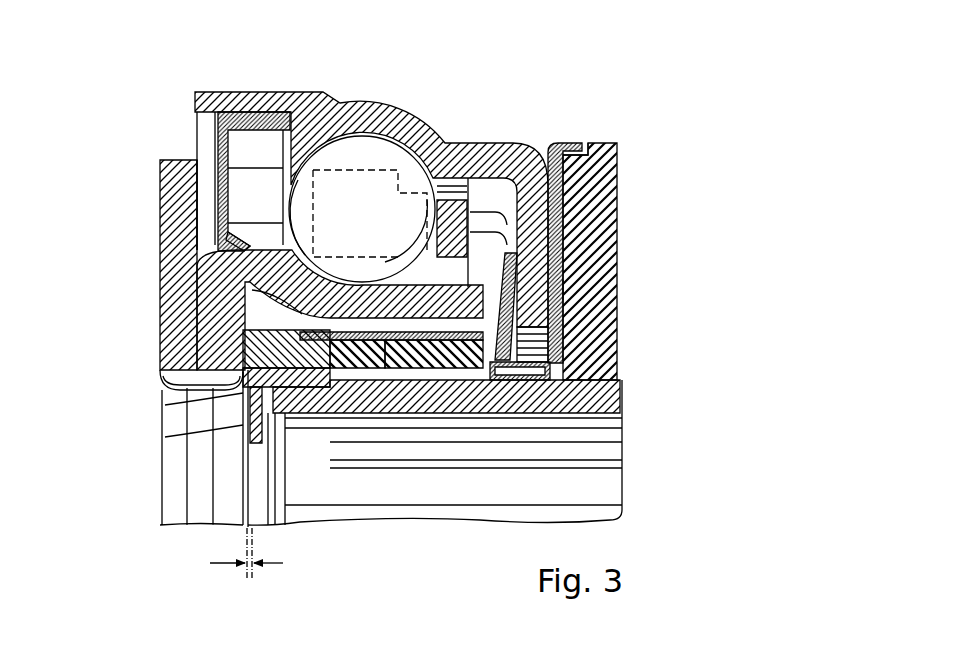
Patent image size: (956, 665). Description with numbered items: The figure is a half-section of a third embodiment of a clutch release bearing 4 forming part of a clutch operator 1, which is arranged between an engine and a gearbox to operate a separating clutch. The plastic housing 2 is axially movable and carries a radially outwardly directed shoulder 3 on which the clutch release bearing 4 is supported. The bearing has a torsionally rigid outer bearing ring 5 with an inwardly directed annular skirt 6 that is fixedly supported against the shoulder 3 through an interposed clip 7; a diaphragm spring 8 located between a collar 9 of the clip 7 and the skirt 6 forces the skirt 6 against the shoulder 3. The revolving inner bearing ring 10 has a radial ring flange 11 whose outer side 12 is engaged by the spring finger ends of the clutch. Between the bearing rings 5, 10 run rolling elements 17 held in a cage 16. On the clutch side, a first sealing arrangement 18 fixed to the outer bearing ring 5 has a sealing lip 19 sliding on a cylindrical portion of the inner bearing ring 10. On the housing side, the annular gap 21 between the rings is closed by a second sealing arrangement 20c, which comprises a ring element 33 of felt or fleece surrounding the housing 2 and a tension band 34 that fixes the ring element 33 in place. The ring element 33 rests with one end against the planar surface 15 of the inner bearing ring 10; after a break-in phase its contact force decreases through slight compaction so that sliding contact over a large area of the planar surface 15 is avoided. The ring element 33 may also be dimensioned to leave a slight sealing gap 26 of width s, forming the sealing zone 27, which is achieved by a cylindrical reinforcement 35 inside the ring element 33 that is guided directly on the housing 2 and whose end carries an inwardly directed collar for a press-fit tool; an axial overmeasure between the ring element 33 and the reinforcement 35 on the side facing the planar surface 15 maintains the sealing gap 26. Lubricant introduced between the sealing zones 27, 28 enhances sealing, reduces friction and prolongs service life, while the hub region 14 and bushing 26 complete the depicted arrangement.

The clutch operator 1 is at (446, 97).
The housing 2 is at (598, 397).
The shoulder 3 is at (598, 213).
The clutch release bearing 4 is at (148, 72).
The outer bearing ring 5 is at (355, 120).
The annular skirt 6 is at (556, 244).
The clip 7 is at (604, 181).
The diaphragm spring 8 is at (518, 305).
The collar 9 is at (557, 371).
The inner bearing ring 10 is at (522, 352).
The ring flange 11 is at (168, 185).
The outer side 12 is at (200, 228).
The hub 14 is at (243, 402).
The planar surface 15 is at (245, 296).
The cage 16 is at (450, 198).
The rolling elements 17 is at (352, 140).
The first sealing arrangement 18 is at (240, 118).
The sealing lip 19 is at (233, 242).
The second sealing arrangement 20c is at (318, 340).
The annular gap 21 is at (584, 283).
The sealing gap 26 is at (262, 458).
The sealing zone 27 is at (230, 372).
The sealing zone 28 is at (245, 340).
The ring element 33 is at (422, 342).
The tension band 34 is at (383, 340).
The cylindrical reinforcement 35 is at (262, 415).
The width of sealing gap s is at (245, 553).